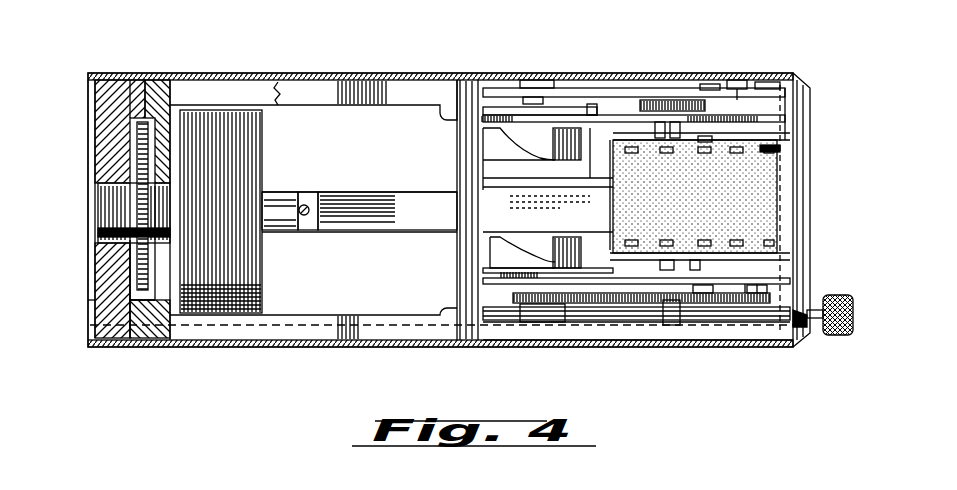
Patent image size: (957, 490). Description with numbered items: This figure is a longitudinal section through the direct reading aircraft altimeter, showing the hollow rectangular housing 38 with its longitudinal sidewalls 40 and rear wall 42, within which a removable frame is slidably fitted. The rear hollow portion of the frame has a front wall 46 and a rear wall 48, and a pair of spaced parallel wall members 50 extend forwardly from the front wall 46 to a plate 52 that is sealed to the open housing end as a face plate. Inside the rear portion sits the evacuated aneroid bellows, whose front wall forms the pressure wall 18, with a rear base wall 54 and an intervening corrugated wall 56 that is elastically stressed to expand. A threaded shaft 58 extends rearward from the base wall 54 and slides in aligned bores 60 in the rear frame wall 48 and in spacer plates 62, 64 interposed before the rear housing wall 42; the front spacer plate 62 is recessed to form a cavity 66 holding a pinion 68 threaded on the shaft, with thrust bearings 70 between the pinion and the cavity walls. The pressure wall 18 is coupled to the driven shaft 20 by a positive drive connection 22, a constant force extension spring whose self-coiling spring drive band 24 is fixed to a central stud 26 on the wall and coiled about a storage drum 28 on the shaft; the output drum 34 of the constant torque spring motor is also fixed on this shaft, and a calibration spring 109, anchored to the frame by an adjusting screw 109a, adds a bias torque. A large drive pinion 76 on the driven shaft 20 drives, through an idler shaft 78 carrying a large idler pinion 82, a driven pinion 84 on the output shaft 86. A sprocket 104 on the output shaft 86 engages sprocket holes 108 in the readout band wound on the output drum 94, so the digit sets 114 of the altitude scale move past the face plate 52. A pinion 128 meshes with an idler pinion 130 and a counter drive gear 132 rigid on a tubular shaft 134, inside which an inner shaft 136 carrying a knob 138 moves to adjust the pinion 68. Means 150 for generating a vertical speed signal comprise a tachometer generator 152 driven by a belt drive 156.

The pressure wall 18 is at (263, 150).
The driven shaft 20 is at (592, 347).
The positive drive connection 22 is at (370, 192).
The spring drive band 24 is at (378, 215).
The central stud 26 is at (287, 193).
The storage drum 28 is at (604, 240).
The output drum 34 is at (606, 112).
The housing 38 is at (426, 76).
The longitudinal sidewalls 40 is at (258, 80).
The rear wall 42 is at (100, 312).
The front wall 46 is at (178, 86).
The rear wall 48 is at (452, 100).
The wall members 50 is at (786, 120).
The plate 52 is at (790, 110).
The rear base wall 54 is at (146, 79).
The corrugated wall 56 is at (268, 347).
The threaded shaft 58 is at (100, 235).
The bores 60 is at (130, 245).
The front spacer plate 62 is at (100, 108).
The rear spacer plate 64 is at (128, 127).
The cavity 66 is at (112, 300).
The pinion 68 is at (137, 150).
The thrust bearings 70 is at (105, 183).
The drive pinion 76 is at (633, 347).
The idler shaft 78 is at (693, 335).
The large idler pinion 82 is at (708, 100).
The driven pinion 84 is at (762, 84).
The output shaft 86 is at (737, 82).
The output drum 94 is at (628, 140).
The sprocket 104 is at (800, 148).
The sprocket holes 108 is at (774, 245).
The calibration spring 109 is at (556, 347).
The adjusting screw 109a is at (482, 310).
The digit sets 114 is at (745, 220).
The pinion 128 is at (777, 357).
The idler pinion 130 is at (748, 335).
The counter drive gear 132 is at (685, 347).
The tubular shaft 134 is at (740, 347).
The inner shaft 136 is at (812, 333).
The knob 138 is at (845, 338).
The means for generating an electrical signal 150 is at (505, 92).
The tachometer generator 152 is at (565, 128).
The belt drive 156 is at (550, 88).